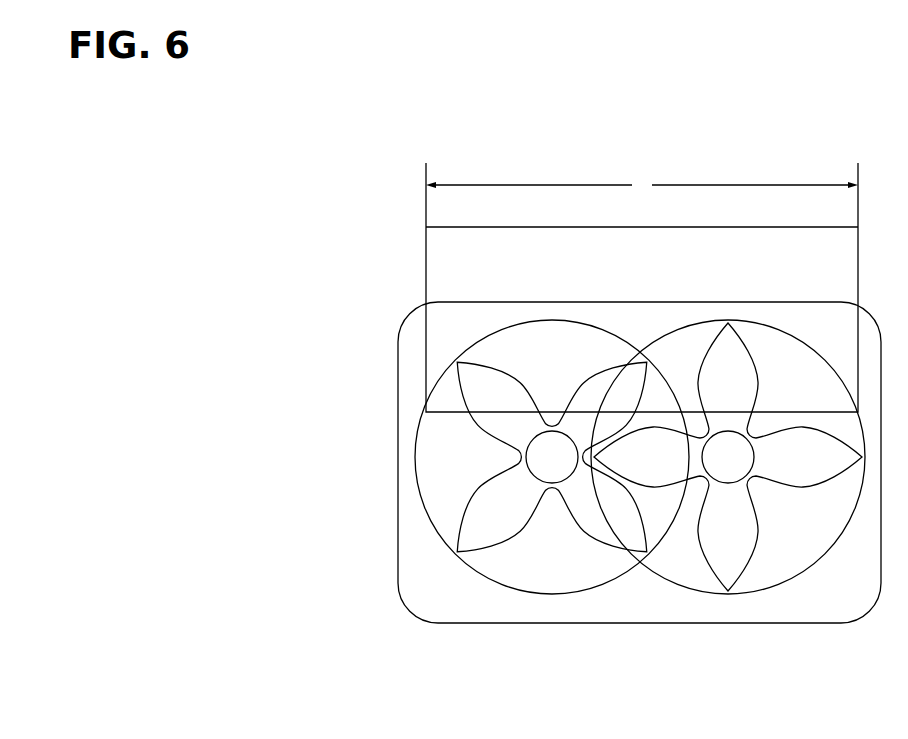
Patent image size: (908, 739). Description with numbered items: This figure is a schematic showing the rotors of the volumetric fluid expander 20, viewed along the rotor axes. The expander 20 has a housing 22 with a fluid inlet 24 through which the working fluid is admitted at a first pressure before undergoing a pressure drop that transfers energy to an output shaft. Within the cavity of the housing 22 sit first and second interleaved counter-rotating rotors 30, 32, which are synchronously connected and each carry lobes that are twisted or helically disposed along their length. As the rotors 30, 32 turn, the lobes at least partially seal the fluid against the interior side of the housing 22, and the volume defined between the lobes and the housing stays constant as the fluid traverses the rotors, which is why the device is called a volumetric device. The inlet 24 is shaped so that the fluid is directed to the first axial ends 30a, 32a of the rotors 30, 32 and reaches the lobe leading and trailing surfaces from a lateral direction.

The volumetric fluid expander 20 is at (322, 184).
The housing 22 is at (398, 395).
The fluid inlet 24 is at (426, 243).
The first rotor 30 is at (637, 555).
The first axial end 30a is at (481, 540).
The second rotor 32 is at (758, 542).
The first axial end 32a is at (725, 548).